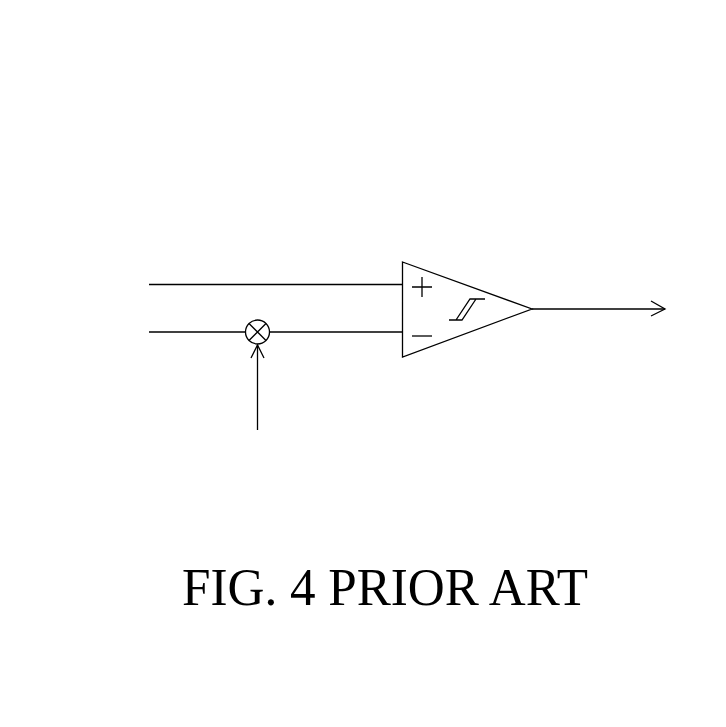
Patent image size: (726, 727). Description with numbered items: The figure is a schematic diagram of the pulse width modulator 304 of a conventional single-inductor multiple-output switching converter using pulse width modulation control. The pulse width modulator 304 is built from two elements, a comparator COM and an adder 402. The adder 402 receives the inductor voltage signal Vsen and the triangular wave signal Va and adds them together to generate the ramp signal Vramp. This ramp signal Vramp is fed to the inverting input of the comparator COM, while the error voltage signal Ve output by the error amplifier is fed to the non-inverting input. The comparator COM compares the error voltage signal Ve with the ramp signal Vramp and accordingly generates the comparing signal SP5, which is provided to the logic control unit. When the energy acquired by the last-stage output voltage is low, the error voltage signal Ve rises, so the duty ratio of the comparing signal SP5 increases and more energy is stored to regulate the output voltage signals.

The pulse width modulator 304 is at (523, 166).
The adder 402 is at (269, 342).
The comparator COM is at (470, 269).
The error voltage signal Ve is at (257, 284).
The inductor voltage signal Vsen is at (165, 333).
The ramp signal Vramp is at (336, 315).
The triangular wave signal Va is at (258, 403).
The comparing signal SP5 is at (621, 308).